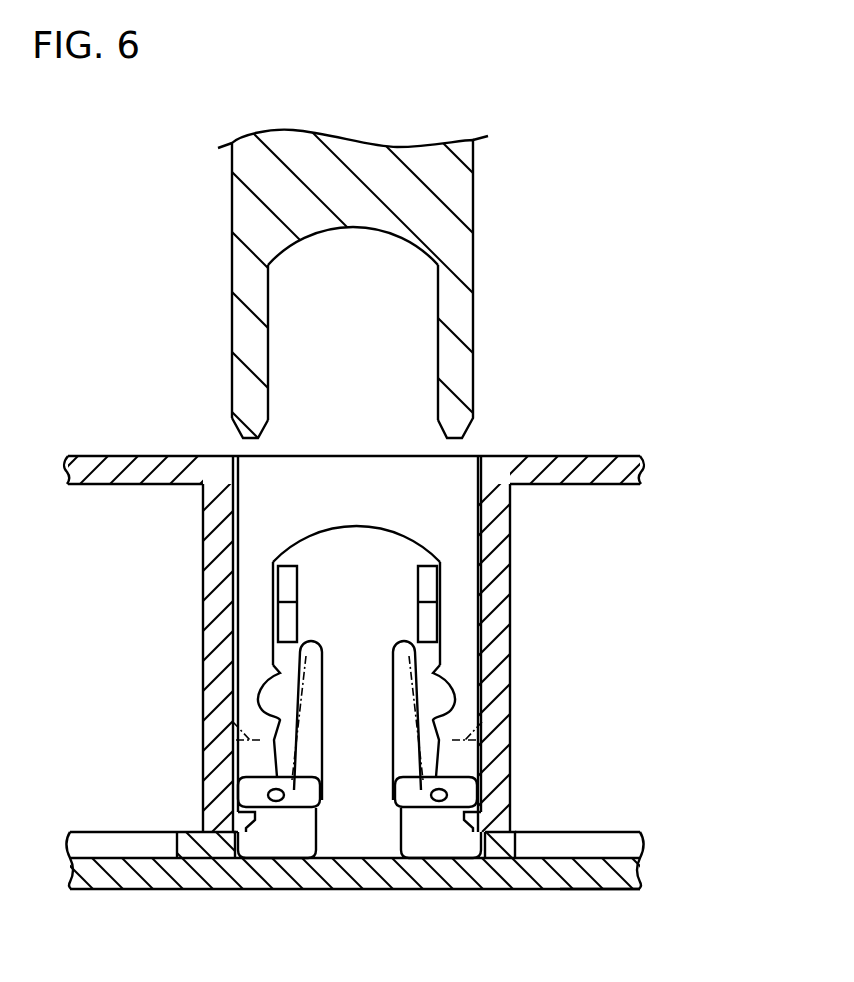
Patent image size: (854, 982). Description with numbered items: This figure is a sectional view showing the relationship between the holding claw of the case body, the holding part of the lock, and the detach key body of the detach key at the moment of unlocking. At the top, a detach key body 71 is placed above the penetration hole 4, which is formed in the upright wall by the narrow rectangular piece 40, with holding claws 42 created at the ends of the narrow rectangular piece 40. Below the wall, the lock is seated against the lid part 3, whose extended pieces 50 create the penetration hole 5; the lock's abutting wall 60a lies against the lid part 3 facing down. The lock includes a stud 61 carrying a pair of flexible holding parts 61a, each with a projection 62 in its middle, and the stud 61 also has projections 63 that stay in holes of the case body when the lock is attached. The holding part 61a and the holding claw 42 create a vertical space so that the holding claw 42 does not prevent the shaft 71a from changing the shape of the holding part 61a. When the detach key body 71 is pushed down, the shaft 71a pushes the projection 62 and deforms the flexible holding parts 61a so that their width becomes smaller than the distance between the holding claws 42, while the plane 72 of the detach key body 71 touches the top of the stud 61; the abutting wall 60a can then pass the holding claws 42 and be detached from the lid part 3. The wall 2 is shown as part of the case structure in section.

The detach key body 71 is at (399, 284).
The plane 72 is at (360, 229).
The shaft 71a is at (438, 336).
The upper plate 2 is at (548, 456).
The penetration hole 4 is at (427, 608).
The narrow rectangular piece 40 is at (493, 538).
The holding claw 42 is at (243, 822).
The lid part 3 is at (364, 867).
The penetration hole 5 is at (243, 838).
The extended piece 50 is at (225, 858).
The abutting wall 60a is at (607, 890).
The stud 61 is at (357, 657).
The flexible holding part 61a is at (435, 760).
The projection 62 is at (448, 697).
The projection 63 is at (423, 618).